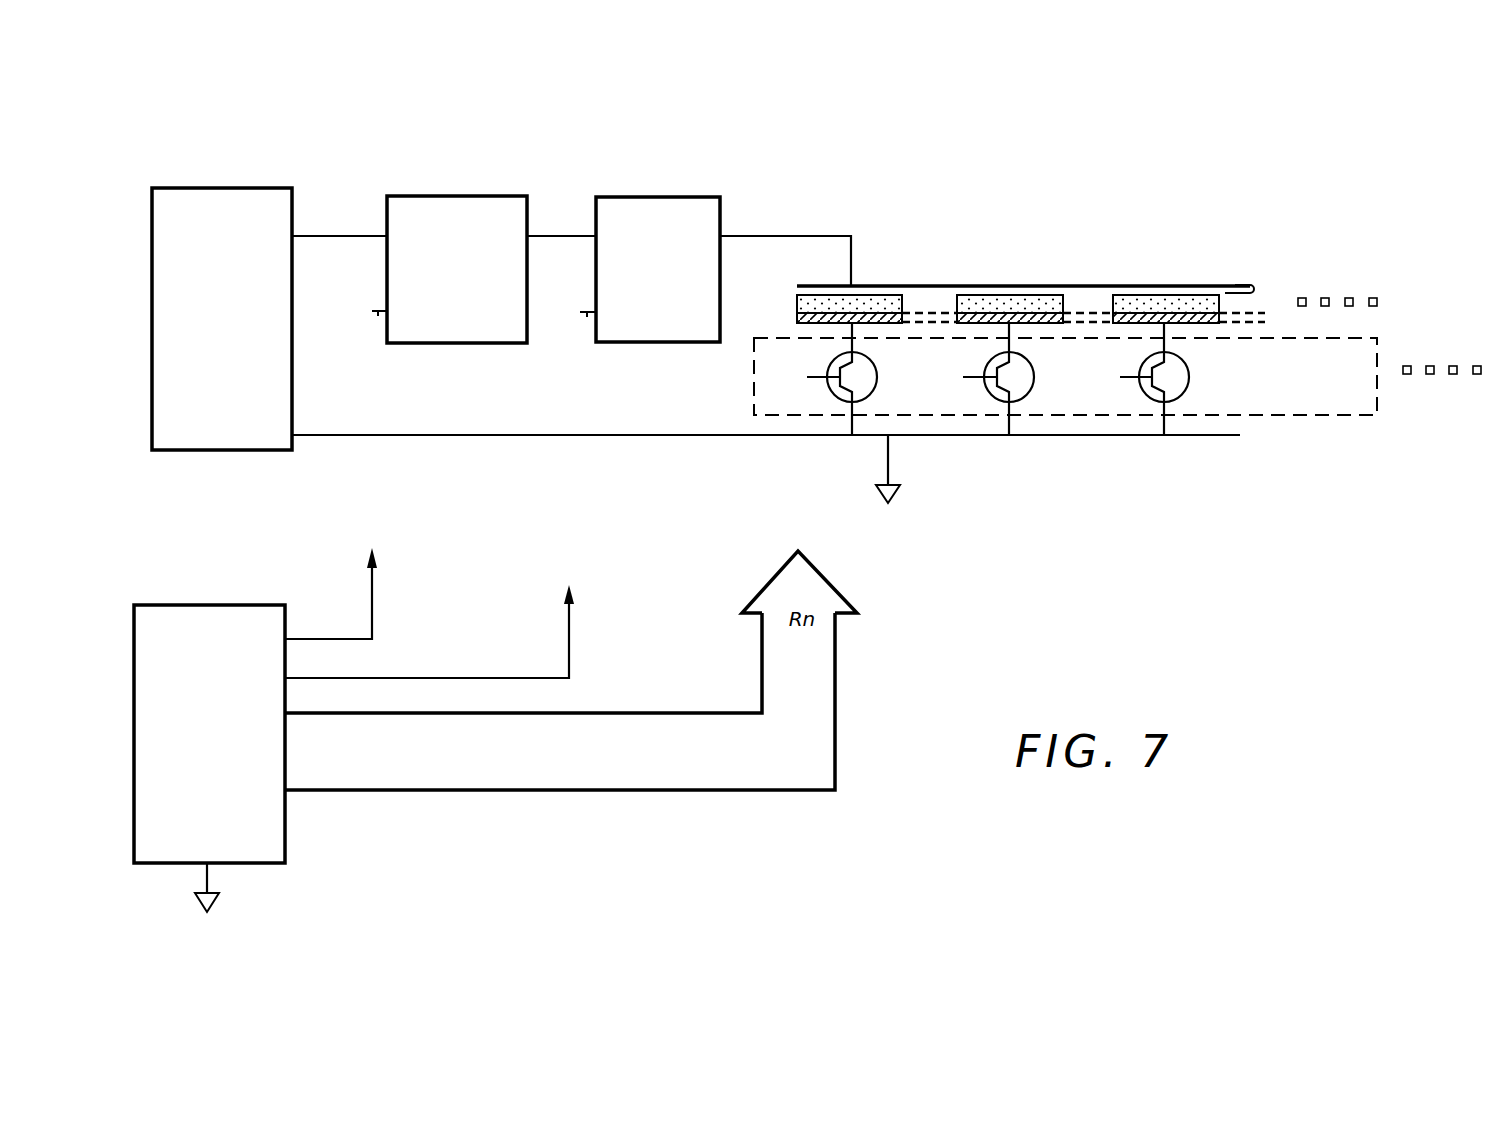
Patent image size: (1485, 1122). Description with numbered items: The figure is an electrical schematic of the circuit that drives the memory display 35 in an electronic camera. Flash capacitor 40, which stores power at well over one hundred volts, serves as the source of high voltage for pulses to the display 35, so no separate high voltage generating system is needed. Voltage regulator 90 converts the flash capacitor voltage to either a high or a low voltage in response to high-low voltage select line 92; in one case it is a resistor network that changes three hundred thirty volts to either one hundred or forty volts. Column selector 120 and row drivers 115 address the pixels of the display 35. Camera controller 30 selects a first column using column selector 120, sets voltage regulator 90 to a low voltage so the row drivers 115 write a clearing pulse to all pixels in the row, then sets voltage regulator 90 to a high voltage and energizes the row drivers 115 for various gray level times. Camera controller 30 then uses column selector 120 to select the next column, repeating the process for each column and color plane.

The flash capacitor 40 is at (207, 196).
The voltage regulator 90 is at (470, 197).
The column selector 120 is at (690, 197).
The high-low voltage select line 92 is at (378, 316).
The display 35 is at (808, 198).
The row drivers 115 is at (826, 398).
The camera controller 30 is at (270, 822).